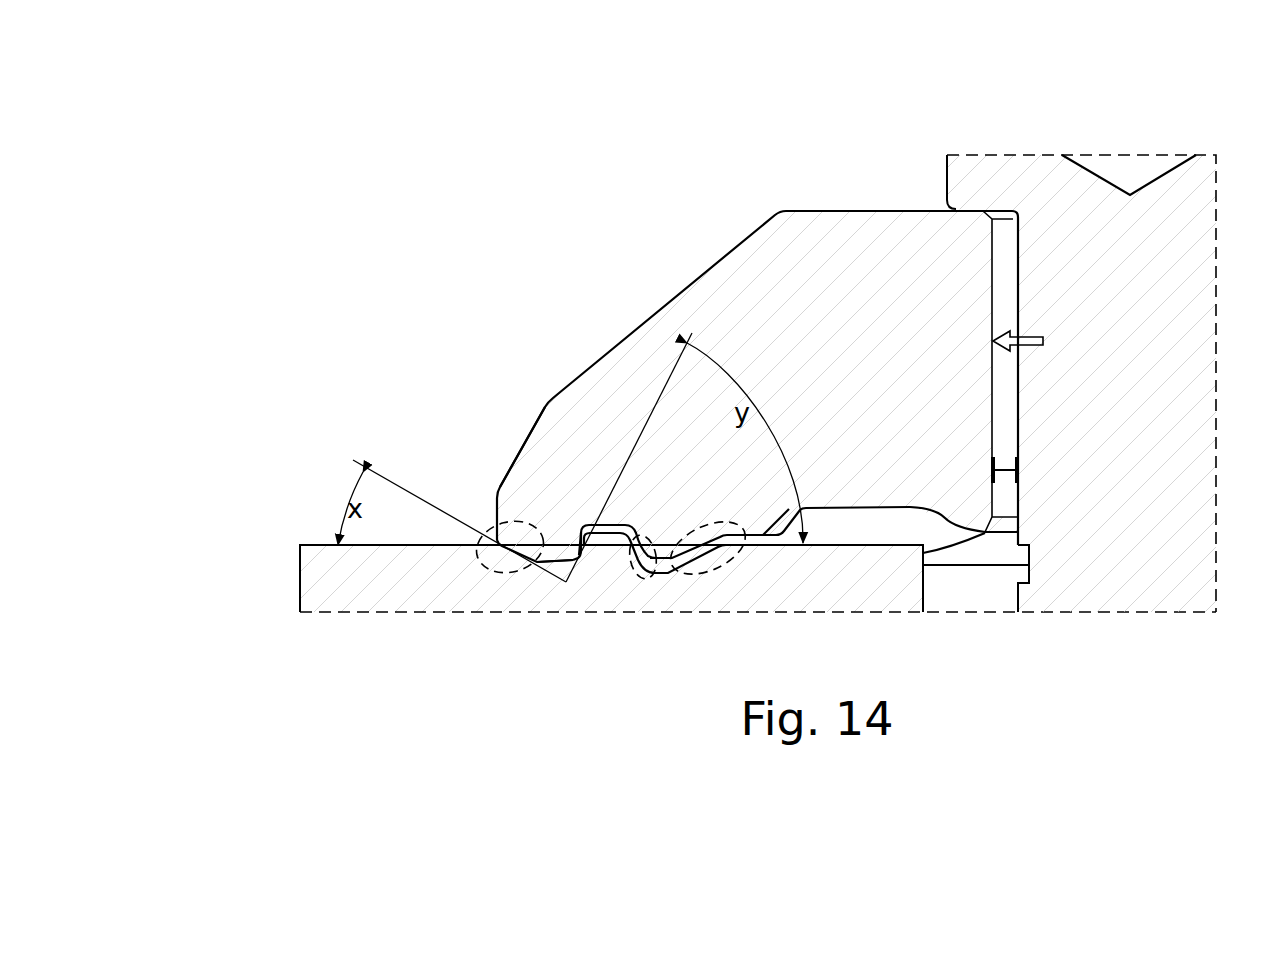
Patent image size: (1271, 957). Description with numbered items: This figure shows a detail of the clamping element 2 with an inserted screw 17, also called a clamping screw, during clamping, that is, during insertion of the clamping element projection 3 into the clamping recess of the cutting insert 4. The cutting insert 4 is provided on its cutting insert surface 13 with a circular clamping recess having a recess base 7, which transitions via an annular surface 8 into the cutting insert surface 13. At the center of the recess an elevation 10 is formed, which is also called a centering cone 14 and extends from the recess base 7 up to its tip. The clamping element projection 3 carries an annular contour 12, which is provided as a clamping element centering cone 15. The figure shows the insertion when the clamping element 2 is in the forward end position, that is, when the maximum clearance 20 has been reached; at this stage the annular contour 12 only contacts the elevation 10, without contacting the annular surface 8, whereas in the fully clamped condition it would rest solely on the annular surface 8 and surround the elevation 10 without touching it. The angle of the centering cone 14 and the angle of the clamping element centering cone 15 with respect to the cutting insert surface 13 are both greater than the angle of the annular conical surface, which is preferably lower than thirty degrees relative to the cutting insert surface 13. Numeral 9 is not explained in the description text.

The clamping element 2 is at (836, 227).
The clamping element projection 3 is at (522, 457).
The cutting insert 4 is at (300, 582).
The recess base 7 is at (572, 566).
The annular surface 8 is at (700, 578).
The lip wall 9 is at (579, 582).
The elevation 10 is at (622, 572).
The annular contour 12 is at (575, 572).
The cutting insert surface 13 is at (879, 546).
The centering cone 14 is at (586, 580).
The clamping element centering cone 15 is at (590, 527).
The screw 17 is at (993, 176).
The maximum clearance 20 is at (993, 470).